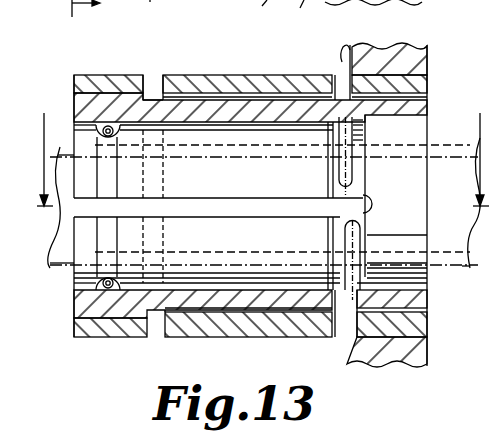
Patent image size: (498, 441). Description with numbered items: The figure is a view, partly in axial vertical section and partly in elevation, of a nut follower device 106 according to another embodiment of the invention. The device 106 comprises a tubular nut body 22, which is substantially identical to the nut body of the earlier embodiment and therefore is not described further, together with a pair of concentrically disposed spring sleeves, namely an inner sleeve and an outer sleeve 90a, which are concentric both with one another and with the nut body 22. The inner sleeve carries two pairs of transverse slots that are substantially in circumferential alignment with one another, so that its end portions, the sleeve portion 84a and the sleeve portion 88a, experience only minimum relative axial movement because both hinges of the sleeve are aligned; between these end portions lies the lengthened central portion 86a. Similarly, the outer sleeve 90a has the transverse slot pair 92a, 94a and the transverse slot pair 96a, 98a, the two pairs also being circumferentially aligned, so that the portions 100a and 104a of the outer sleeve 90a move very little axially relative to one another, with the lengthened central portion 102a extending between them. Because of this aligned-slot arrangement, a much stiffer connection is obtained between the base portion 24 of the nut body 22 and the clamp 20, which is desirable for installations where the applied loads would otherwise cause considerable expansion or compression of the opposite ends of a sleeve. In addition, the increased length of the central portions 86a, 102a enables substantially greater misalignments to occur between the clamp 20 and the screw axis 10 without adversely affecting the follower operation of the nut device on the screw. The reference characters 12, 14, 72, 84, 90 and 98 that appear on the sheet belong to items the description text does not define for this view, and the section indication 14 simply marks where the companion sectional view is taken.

The screw axis 10 is at (447, 260).
The coupling 12 is at (103, 8).
The section line 14 is at (265, 148).
The clamp 20 is at (410, 50).
The nut body 22 is at (232, 293).
The base portion 24 is at (415, 128).
The ring 72 is at (253, 11).
The housing 84 is at (152, 7).
The sleeve portion 84a is at (87, 108).
The central portion 86a is at (273, 300).
The sleeve portion 88a is at (423, 322).
The collar 90 is at (295, 12).
The outer sleeve 90a is at (200, 73).
The transverse slot 92a is at (150, 90).
The transverse slot 94a is at (163, 322).
The transverse slot 96a is at (277, 84).
The passage 98 is at (369, 5).
The transverse slot 98a is at (345, 322).
The sleeve portion 100a is at (99, 82).
The central portion 102a is at (297, 50).
The sleeve portion 104a is at (413, 82).
The nut follower device 106 is at (104, 352).